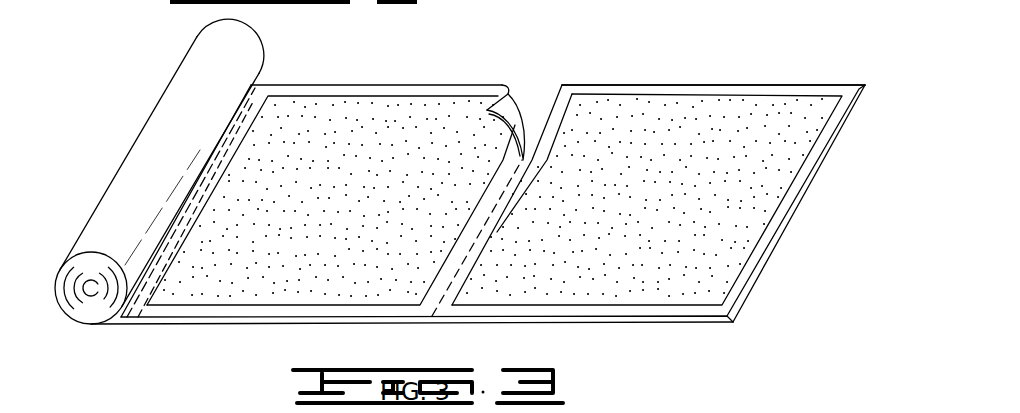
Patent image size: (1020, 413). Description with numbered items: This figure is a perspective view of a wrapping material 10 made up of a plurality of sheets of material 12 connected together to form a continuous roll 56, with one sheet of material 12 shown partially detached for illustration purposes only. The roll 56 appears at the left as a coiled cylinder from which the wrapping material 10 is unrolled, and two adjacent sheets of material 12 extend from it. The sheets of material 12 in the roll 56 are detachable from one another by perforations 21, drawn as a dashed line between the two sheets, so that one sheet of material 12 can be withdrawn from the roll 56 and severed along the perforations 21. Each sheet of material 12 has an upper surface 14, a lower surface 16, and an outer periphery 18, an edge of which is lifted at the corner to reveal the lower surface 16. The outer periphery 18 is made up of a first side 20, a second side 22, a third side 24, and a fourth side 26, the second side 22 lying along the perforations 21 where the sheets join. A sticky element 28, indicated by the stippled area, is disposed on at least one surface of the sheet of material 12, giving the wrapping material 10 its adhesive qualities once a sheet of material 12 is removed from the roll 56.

The wrapping material 10 is at (620, 45).
The sheet of material 12 is at (493, 177).
The upper surface 14 is at (805, 175).
The lower surface 16 is at (510, 103).
The outer periphery 18 is at (706, 324).
The first side 20 is at (797, 207).
The perforations 21 is at (429, 326).
The second side 22 is at (547, 98).
The third side 24 is at (639, 84).
The fourth side 26 is at (587, 322).
The sticky element 28 is at (718, 258).
The roll 56 is at (262, 42).